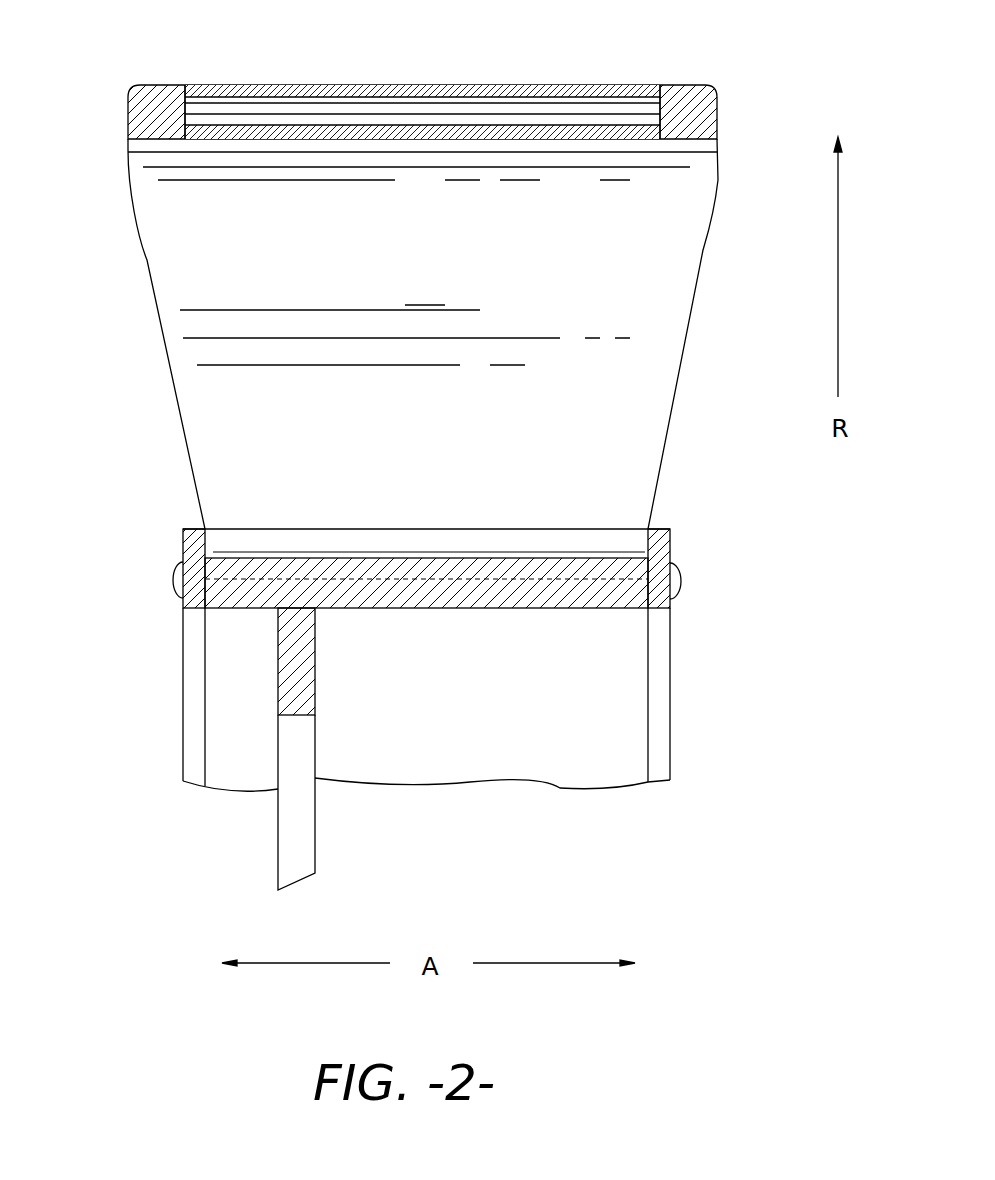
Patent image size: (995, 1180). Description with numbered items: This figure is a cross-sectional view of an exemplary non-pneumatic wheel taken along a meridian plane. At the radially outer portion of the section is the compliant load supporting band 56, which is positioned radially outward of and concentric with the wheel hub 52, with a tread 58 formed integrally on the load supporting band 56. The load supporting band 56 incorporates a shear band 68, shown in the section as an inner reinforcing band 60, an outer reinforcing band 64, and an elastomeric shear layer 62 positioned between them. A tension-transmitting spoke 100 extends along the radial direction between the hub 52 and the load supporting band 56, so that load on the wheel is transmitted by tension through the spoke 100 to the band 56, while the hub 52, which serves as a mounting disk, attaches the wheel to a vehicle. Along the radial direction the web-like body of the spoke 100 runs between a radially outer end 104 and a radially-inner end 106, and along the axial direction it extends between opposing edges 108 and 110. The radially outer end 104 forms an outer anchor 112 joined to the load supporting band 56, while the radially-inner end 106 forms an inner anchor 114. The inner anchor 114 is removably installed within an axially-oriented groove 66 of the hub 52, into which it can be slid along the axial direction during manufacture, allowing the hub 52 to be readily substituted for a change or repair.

The wheel hub 52 is at (292, 834).
The load supporting band 56 is at (720, 117).
The tread 58 is at (460, 85).
The inner reinforcing band 60 is at (247, 130).
The shear layer 62 is at (280, 113).
The outer reinforcing band 64 is at (345, 87).
The axially-oriented groove 66 is at (240, 590).
The shear band 68 is at (597, 85).
The spoke 100 is at (657, 350).
The radially outer end 104 is at (748, 145).
The radially-inner end 106 is at (165, 524).
The edge 108 is at (160, 330).
The edge 110 is at (705, 249).
The outer anchor 112 is at (130, 148).
The inner anchor 114 is at (663, 570).